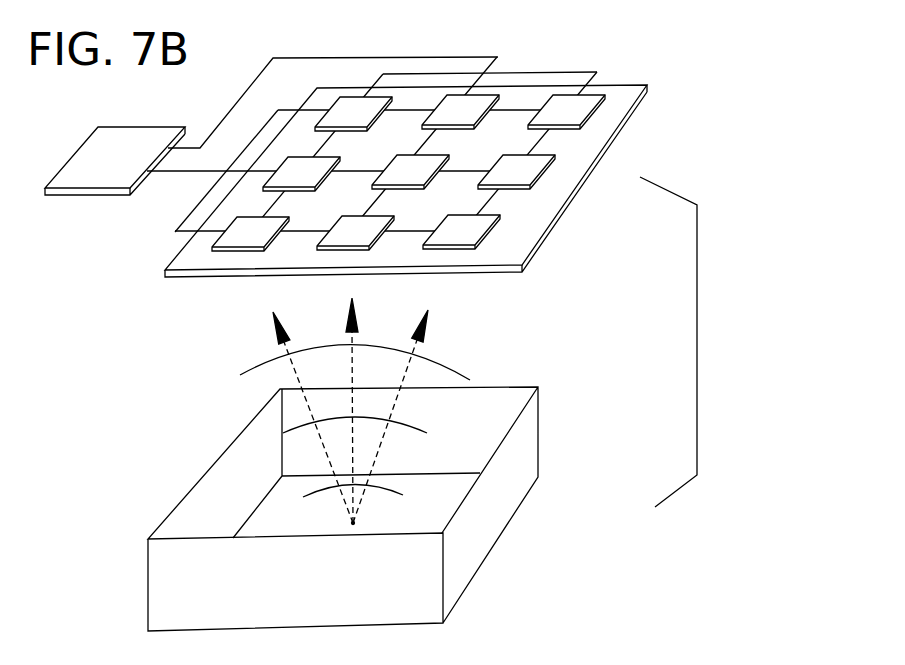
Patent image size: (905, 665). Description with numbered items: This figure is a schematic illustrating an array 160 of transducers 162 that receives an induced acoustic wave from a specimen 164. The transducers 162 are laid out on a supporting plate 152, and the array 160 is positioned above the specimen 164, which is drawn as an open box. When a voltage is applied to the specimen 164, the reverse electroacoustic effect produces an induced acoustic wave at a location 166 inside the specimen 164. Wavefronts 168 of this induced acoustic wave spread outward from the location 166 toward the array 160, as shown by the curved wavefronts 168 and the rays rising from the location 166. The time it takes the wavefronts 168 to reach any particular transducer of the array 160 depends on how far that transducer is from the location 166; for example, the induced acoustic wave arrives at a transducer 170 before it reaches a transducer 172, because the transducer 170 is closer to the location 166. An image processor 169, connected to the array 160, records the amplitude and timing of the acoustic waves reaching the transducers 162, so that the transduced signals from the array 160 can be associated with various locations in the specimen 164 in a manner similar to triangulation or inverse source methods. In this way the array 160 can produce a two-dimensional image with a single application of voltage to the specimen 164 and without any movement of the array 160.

The substrate 152 is at (603, 87).
The array 160 is at (677, 132).
The transducers 162 is at (480, 227).
The specimen 164 is at (490, 525).
The location 166 is at (353, 527).
The wavefronts 168 is at (283, 432).
The image processor 169 is at (87, 192).
The transducer 170 is at (347, 236).
The transducer 172 is at (346, 108).